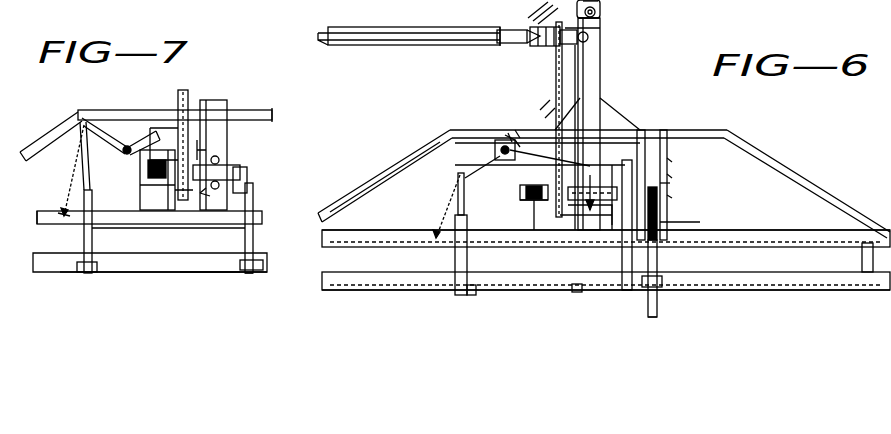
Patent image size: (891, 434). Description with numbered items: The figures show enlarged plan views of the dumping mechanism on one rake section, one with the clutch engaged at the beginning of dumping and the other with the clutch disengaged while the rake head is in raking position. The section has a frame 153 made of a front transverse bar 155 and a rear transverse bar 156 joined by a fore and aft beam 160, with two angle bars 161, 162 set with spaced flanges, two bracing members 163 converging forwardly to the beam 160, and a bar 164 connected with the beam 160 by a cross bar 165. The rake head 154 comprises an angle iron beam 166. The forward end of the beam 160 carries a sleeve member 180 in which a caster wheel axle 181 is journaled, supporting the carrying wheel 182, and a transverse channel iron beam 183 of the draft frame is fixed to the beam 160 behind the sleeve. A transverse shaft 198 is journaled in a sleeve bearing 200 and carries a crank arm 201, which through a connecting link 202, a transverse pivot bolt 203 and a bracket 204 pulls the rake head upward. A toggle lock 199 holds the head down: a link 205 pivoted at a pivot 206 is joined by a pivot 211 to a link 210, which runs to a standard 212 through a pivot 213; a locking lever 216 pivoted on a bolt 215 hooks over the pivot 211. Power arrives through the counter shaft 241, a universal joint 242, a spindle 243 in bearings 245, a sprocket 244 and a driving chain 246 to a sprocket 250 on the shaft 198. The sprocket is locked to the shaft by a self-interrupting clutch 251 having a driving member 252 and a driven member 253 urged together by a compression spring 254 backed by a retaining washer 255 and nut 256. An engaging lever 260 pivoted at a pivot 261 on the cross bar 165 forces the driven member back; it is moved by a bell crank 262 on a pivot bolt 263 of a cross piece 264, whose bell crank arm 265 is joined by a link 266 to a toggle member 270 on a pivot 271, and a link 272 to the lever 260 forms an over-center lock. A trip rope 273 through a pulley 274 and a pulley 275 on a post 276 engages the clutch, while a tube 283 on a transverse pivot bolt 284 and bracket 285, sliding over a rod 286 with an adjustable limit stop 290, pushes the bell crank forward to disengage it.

In FIG. 6, the frame 153 is at (812, 168).
In FIG. 7, the rake head 154 is at (168, 276).
In FIG. 6, the rake head 154 is at (738, 293).
In FIG. 7, the front transverse bar 155 is at (246, 117).
In FIG. 6, the front transverse bar 155 is at (706, 133).
In FIG. 7, the rear transverse bar 156 is at (45, 226).
In FIG. 6, the rear transverse bar 156 is at (800, 233).
In FIG. 7, the fore and aft beam 160 is at (214, 137).
In FIG. 6, the fore and aft beam 160 is at (590, 78).
In FIG. 6, the angle bar 161 is at (642, 128).
In FIG. 6, the angle bar 162 is at (666, 130).
In FIG. 6, the bracing member 163 is at (630, 118).
In FIG. 7, the bar 164 is at (137, 226).
In FIG. 6, the bar 164 is at (515, 245).
In FIG. 7, the cross bar 165 is at (200, 150).
In FIG. 7, the angle iron beam 166 is at (210, 260).
In FIG. 6, the angle iron beam 166 is at (840, 278).
In FIG. 6, the sleeve member 180 is at (601, 21).
In FIG. 6, the caster wheel axle 181 is at (603, 8).
In FIG. 6, the carrying wheel 182 is at (612, 55).
In FIG. 6, the transverse channel iron beam 183 is at (370, 47).
In FIG. 6, the transverse shaft 198 is at (570, 250).
In FIG. 6, the toggle lock 199 is at (680, 222).
In FIG. 7, the sleeve bearing 200 is at (230, 170).
In FIG. 6, the sleeve bearing 200 is at (570, 245).
In FIG. 7, the crank arm 201 is at (248, 178).
In FIG. 6, the crank arm 201 is at (570, 248).
In FIG. 7, the connecting link 202 is at (254, 228).
In FIG. 6, the connecting link 202 is at (622, 274).
In FIG. 7, the transverse pivot bolt 203 is at (264, 266).
In FIG. 6, the transverse pivot bolt 203 is at (578, 292).
In FIG. 7, the bracket 204 is at (258, 278).
In FIG. 6, the bracket 204 is at (622, 291).
In FIG. 6, the link 205 is at (670, 176).
In FIG. 6, the pivot 206 is at (670, 160).
In FIG. 6, the link 210 is at (659, 258).
In FIG. 6, the pivot 211 is at (669, 196).
In FIG. 6, the standard 212 is at (662, 282).
In FIG. 6, the pivot 213 is at (660, 300).
In FIG. 6, the bolt 215 is at (670, 183).
In FIG. 6, the locking lever 216 is at (659, 212).
In FIG. 6, the counter shaft 241 is at (420, 46).
In FIG. 6, the universal joint 242 is at (512, 34).
In FIG. 6, the spindle 243 is at (524, 47).
In FIG. 6, the sprocket 244 is at (535, 17).
In FIG. 6, the bearing 245 is at (545, 48).
In FIG. 7, the driving chain 246 is at (178, 95).
In FIG. 6, the driving chain 246 is at (556, 90).
In FIG. 7, the sprocket 250 is at (203, 193).
In FIG. 6, the sprocket 250 is at (592, 182).
In FIG. 6, the self-interrupting clutch 251 is at (565, 200).
In FIG. 7, the driving member 252 is at (180, 205).
In FIG. 7, the driven member 253 is at (148, 207).
In FIG. 6, the compression spring 254 is at (520, 205).
In FIG. 7, the retaining washer 255 is at (140, 200).
In FIG. 7, the nut 256 is at (148, 177).
In FIG. 7, the engaging lever 260 is at (100, 132).
In FIG. 6, the engaging lever 260 is at (508, 180).
In FIG. 7, the pivot 261 is at (124, 150).
In FIG. 6, the pivot 261 is at (590, 162).
In FIG. 7, the bell crank 262 is at (92, 112).
In FIG. 6, the bell crank 262 is at (442, 150).
In FIG. 7, the pivot bolt 263 is at (80, 152).
In FIG. 6, the pivot bolt 263 is at (495, 152).
In FIG. 6, the cross piece 264 is at (520, 190).
In FIG. 6, the bell crank arm 265 is at (518, 146).
In FIG. 6, the link 266 is at (510, 132).
In FIG. 6, the toggle member 270 is at (505, 135).
In FIG. 6, the pivot 271 is at (545, 110).
In FIG. 6, the link 272 is at (517, 132).
In FIG. 6, the trip rope 273 is at (408, 158).
In FIG. 7, the pulley 274 is at (60, 213).
In FIG. 6, the pulley 274 is at (435, 236).
In FIG. 6, the pulley 275 is at (612, 35).
In FIG. 6, the post 276 is at (600, 46).
In FIG. 7, the tube 283 is at (92, 228).
In FIG. 6, the tube 283 is at (456, 261).
In FIG. 7, the transverse pivot bolt 284 is at (97, 267).
In FIG. 6, the transverse pivot bolt 284 is at (450, 287).
In FIG. 7, the bracket 285 is at (78, 276).
In FIG. 6, the bracket 285 is at (476, 292).
In FIG. 7, the rod 286 is at (70, 183).
In FIG. 6, the rod 286 is at (445, 200).
In FIG. 6, the adjustable limit stop 290 is at (457, 183).